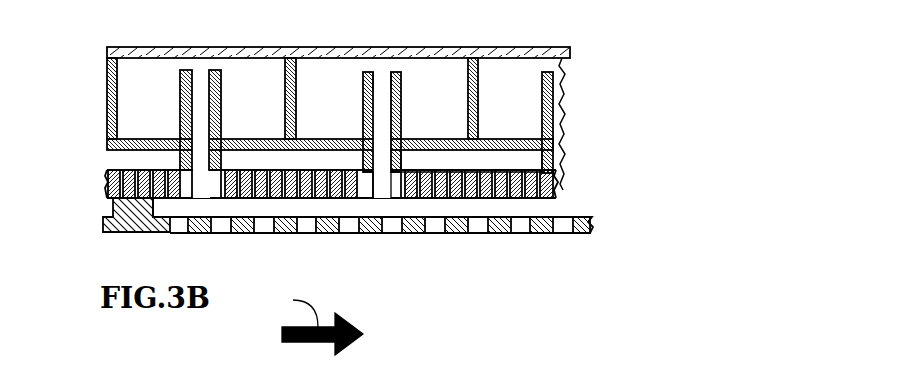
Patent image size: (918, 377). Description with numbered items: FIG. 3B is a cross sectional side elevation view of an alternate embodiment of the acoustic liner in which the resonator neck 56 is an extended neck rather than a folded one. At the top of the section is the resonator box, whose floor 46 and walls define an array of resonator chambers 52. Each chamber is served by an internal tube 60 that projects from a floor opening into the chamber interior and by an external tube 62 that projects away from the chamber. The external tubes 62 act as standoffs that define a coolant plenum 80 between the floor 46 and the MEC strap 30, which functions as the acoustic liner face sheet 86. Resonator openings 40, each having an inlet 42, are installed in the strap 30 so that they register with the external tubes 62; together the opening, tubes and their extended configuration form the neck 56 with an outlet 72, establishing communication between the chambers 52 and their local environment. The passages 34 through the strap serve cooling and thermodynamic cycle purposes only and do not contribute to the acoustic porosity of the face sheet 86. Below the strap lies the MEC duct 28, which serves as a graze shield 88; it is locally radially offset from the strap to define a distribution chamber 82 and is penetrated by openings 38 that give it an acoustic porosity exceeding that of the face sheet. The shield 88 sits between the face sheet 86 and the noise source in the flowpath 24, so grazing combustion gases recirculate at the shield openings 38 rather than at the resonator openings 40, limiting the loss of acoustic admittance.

The flowpath 24 is at (327, 282).
The MEC duct 28 is at (97, 232).
The shield 88 is at (103, 217).
The MEC strap 30 is at (295, 170).
The acoustic liner face sheet 86 is at (104, 190).
The passages 34 is at (547, 200).
The openings 38 is at (480, 233).
The resonator openings 40 is at (382, 198).
The inlet 42 is at (378, 198).
The floor 46 is at (485, 140).
The resonator chambers 52 is at (449, 114).
The resonator neck 56 is at (412, 80).
The internal tube 60 is at (363, 100).
The external tube 62 is at (402, 161).
The outlet 72 is at (380, 72).
The coolant plenum 80 is at (118, 152).
The distribution chamber 82 is at (217, 207).